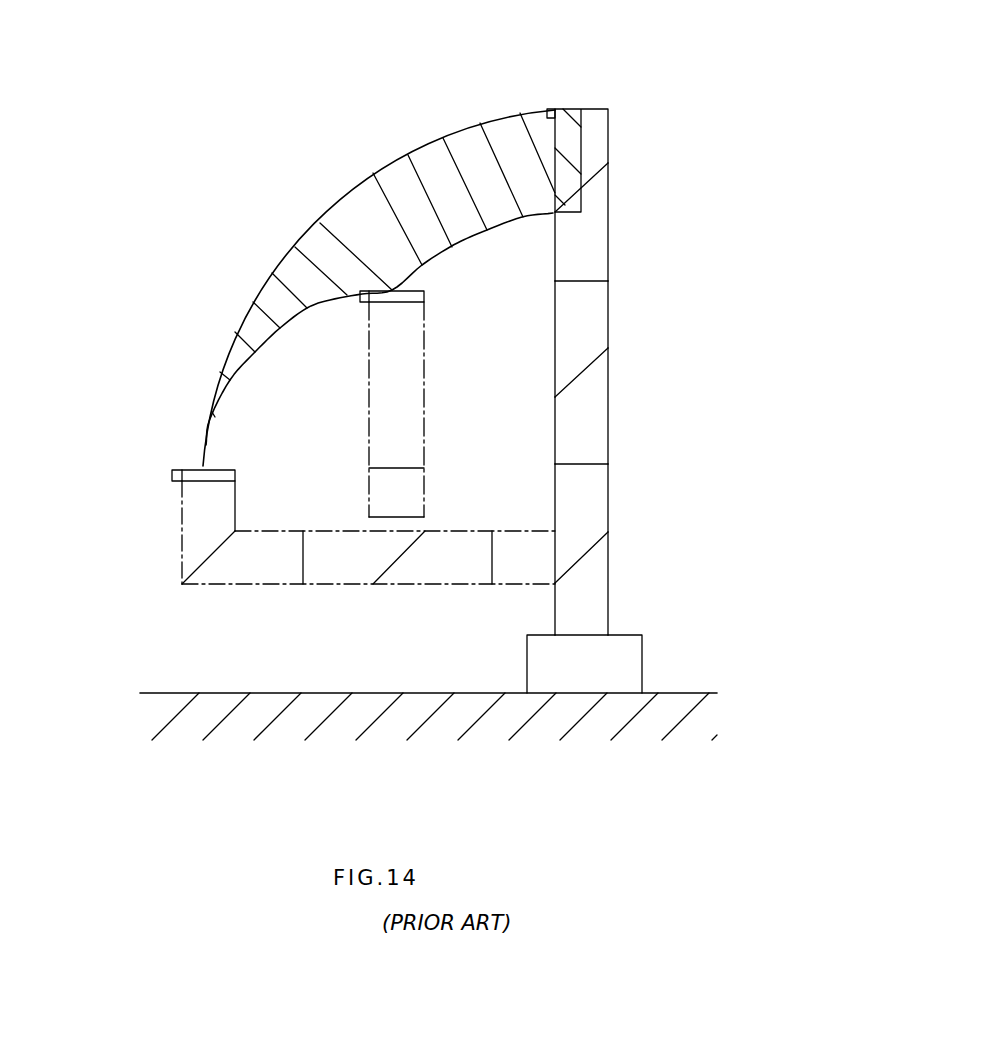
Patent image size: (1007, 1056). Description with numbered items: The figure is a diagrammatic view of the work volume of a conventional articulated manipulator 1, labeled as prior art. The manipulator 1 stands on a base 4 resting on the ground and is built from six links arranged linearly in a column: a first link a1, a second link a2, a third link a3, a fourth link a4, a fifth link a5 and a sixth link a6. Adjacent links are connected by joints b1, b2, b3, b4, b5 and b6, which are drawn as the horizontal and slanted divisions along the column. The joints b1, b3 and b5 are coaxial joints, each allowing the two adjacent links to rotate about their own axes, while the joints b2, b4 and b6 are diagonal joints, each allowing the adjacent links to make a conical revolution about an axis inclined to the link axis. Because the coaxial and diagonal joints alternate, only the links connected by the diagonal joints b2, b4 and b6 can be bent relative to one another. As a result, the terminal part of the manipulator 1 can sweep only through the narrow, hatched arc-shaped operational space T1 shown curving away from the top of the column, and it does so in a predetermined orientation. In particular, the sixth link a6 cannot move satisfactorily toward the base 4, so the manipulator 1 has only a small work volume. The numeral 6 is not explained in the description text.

The articulated manipulator 1 is at (803, 160).
The operational space T1 is at (470, 140).
The vertical support column 6 is at (582, 108).
The base 4 is at (633, 667).
The first link a1 is at (595, 593).
The second link a2 is at (598, 503).
The third link a3 is at (598, 402).
The fourth link a4 is at (598, 309).
The fifth link a5 is at (602, 214).
The sixth link a6 is at (602, 127).
The coaxial joint b1 is at (582, 633).
The diagonal joint b2 is at (590, 552).
The coaxial joint b3 is at (593, 464).
The diagonal joint b4 is at (596, 363).
The coaxial joint b5 is at (590, 278).
The diagonal joint b6 is at (598, 178).